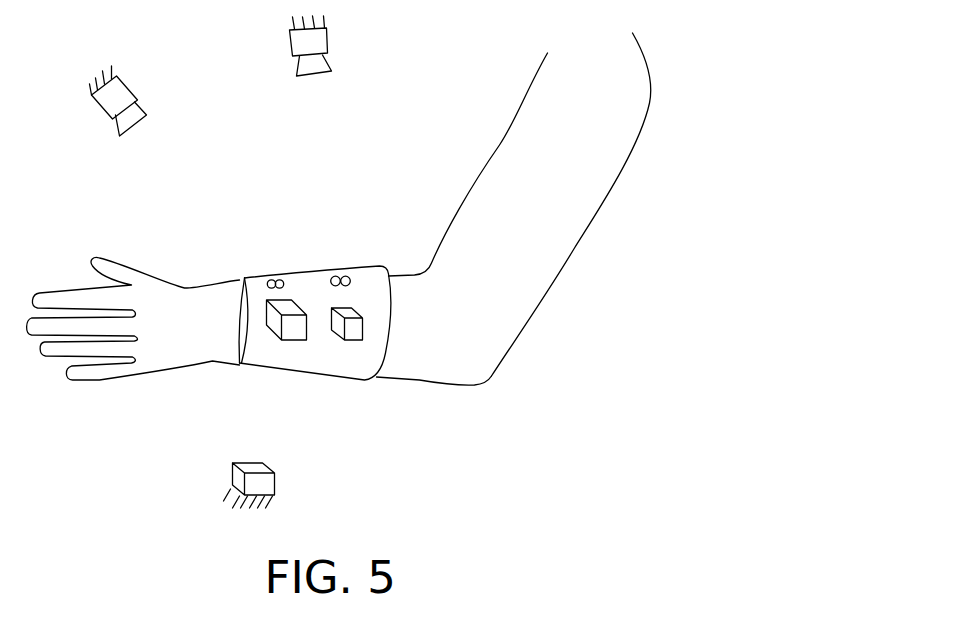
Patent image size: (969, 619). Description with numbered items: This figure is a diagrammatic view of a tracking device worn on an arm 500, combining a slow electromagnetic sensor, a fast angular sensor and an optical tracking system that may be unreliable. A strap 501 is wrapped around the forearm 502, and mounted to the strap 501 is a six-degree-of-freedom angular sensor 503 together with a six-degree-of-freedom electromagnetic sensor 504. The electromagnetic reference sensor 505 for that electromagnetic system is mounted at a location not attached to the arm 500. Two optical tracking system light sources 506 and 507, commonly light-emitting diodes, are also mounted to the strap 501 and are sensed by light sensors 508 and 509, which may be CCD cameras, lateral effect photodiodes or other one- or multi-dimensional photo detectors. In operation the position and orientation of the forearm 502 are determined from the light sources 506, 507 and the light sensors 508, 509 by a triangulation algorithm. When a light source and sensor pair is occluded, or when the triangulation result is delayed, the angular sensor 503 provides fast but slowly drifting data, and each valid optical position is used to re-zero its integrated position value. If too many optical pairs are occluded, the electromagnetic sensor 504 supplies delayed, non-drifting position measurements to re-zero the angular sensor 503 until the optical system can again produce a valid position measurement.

The arm 500 is at (514, 230).
The strap 501 is at (317, 366).
The forearm 502 is at (405, 352).
The 6-DOF-A 503 is at (353, 330).
The 6-DOF-E 504 is at (287, 330).
The electromagnetic reference sensor 505 is at (260, 487).
The optical tracking system light source 506 is at (280, 282).
The optical tracking system light source 507 is at (347, 279).
The light sensor 508 is at (110, 110).
The light sensor 509 is at (313, 68).